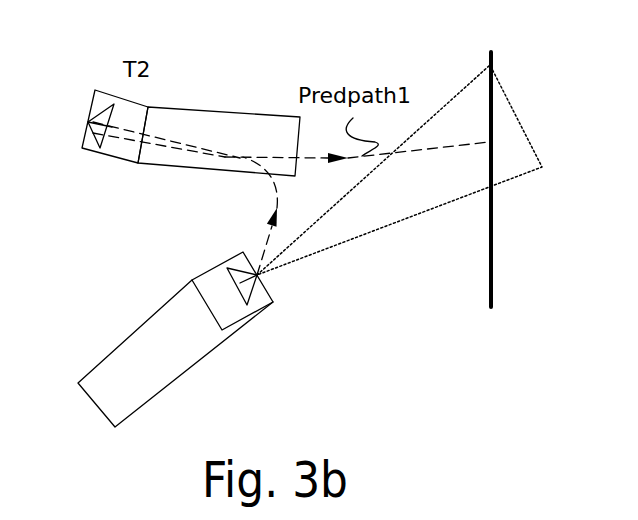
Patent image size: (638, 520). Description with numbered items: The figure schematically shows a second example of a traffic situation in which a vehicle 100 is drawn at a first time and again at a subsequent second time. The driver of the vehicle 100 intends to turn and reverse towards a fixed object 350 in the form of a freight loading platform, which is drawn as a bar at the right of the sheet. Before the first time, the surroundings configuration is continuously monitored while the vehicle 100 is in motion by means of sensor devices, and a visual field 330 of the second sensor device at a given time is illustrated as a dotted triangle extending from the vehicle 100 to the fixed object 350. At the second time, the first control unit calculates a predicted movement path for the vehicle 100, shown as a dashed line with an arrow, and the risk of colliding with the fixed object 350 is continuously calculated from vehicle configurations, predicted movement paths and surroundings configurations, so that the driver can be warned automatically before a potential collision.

The vehicle 100 is at (184, 267).
The visual field 330 is at (342, 244).
The fixed object 350 is at (488, 63).